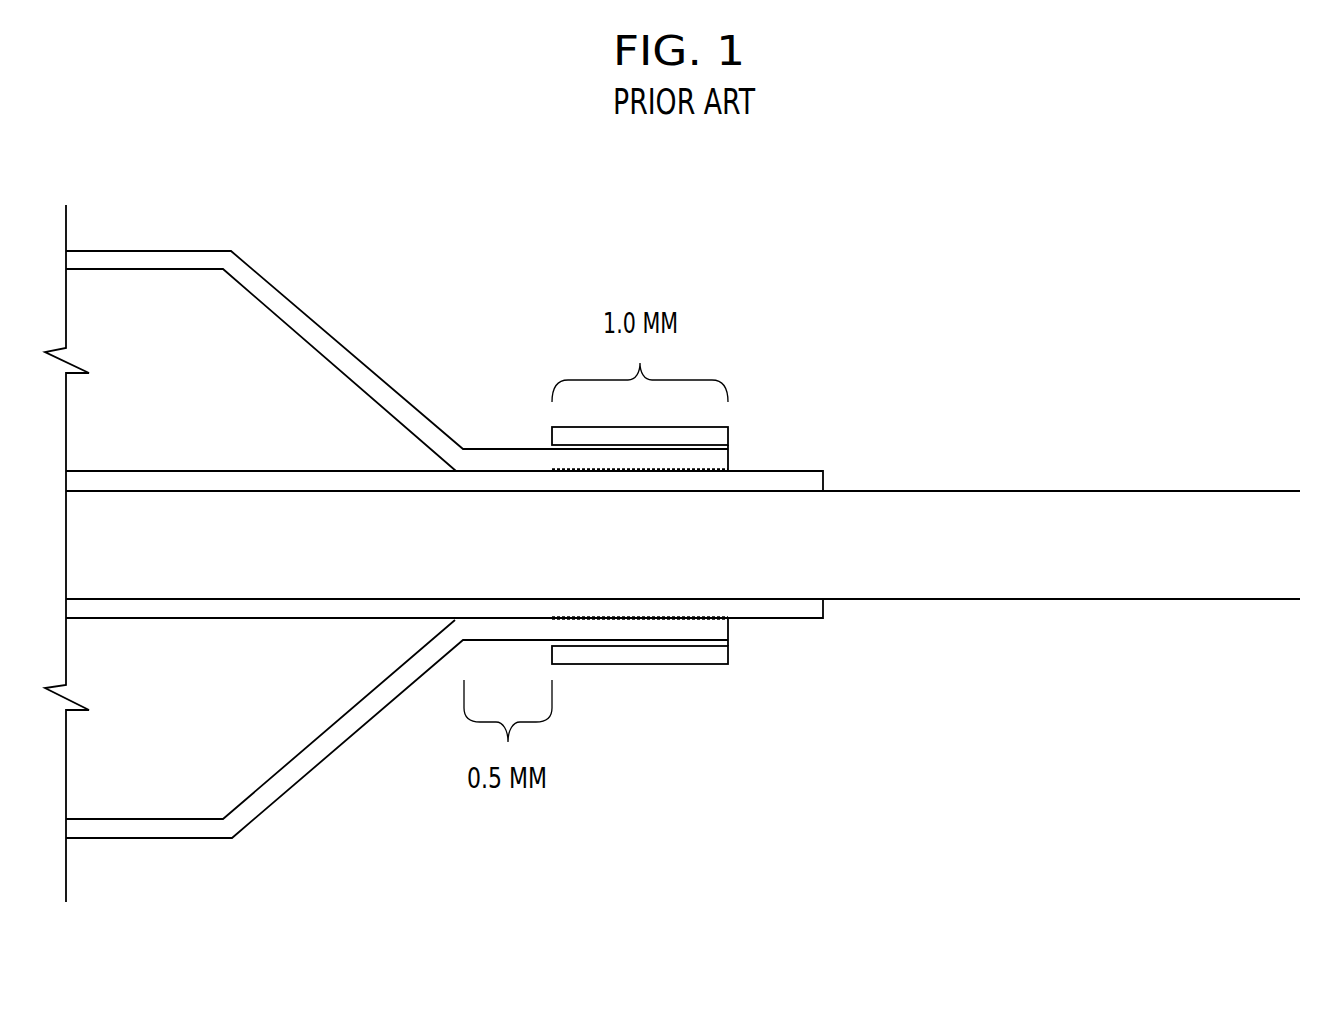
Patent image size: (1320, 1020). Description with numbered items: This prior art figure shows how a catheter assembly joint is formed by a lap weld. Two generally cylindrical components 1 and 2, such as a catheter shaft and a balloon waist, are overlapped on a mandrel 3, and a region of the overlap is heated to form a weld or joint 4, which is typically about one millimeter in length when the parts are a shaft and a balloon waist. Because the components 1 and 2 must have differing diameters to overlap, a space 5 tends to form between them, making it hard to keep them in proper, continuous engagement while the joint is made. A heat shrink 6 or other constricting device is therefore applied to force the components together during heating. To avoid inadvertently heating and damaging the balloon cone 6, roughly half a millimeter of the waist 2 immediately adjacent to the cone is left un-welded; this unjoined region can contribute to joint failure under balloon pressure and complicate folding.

The component 1 is at (785, 609).
The component 2 is at (509, 457).
The mandrel 3 is at (1097, 502).
The joint 4 is at (703, 469).
The space 5 is at (502, 618).
The heat shrink 6 is at (686, 427).